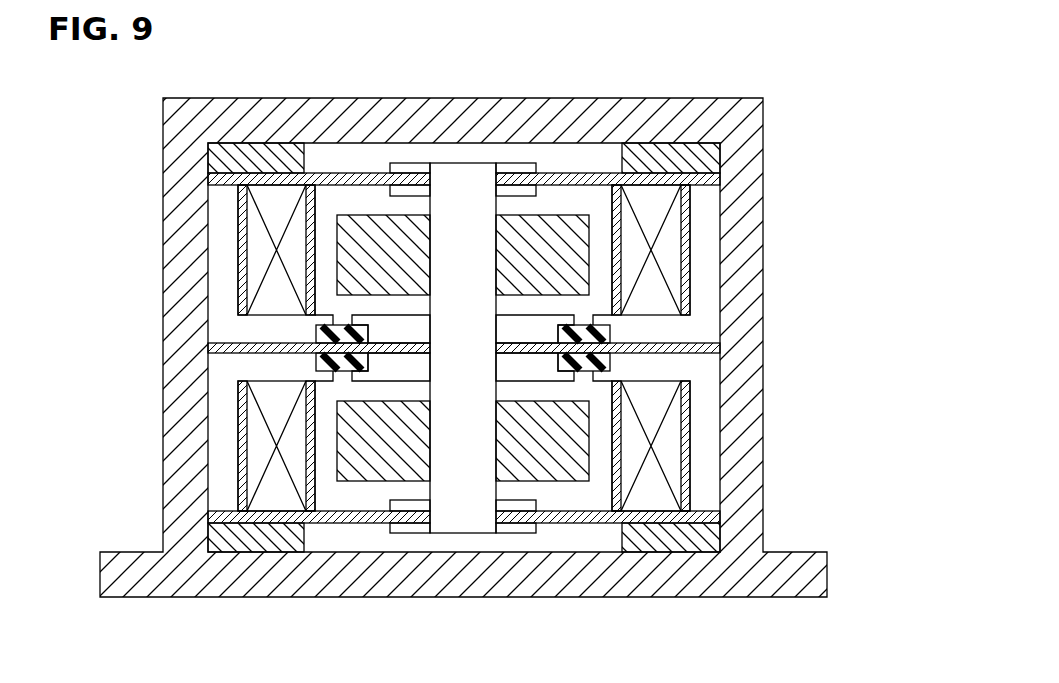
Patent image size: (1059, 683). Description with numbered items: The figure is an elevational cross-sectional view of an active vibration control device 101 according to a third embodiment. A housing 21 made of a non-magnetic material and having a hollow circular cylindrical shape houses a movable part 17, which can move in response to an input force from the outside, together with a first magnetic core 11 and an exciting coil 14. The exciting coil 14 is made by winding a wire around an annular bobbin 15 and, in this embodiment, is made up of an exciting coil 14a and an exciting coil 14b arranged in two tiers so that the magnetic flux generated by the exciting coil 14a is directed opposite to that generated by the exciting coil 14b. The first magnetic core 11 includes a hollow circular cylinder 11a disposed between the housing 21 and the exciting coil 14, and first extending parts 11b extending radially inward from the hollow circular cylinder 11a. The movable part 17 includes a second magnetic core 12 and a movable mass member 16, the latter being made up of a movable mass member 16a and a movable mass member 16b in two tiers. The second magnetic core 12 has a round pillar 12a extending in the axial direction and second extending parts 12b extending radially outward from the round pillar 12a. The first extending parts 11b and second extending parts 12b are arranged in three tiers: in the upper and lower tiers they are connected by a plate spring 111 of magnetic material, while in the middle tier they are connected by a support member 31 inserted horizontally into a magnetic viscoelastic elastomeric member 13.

The active vibration control device 101 is at (799, 74).
The housing 21 is at (163, 147).
The plate spring 111 is at (345, 177).
The second magnetic core 12 is at (563, 63).
The round pillar 12a is at (463, 177).
The second extending part 12b is at (520, 170).
The magnetic viscoelastic elastomeric member 13 is at (353, 243).
The exciting coil 14 is at (90, 258).
The exciting coil 14a is at (260, 272).
The exciting coil 14b is at (260, 423).
The bobbin 15 is at (238, 208).
The movable mass member 16 is at (685, 63).
The movable mass member 16a is at (557, 247).
The movable mass member 16b is at (547, 420).
The movable part 17 is at (420, 162).
The support member 31 is at (393, 355).
The first magnetic core 11 is at (778, 637).
The hollow circular cylinder 11a is at (708, 482).
The first extending part 11b is at (640, 366).